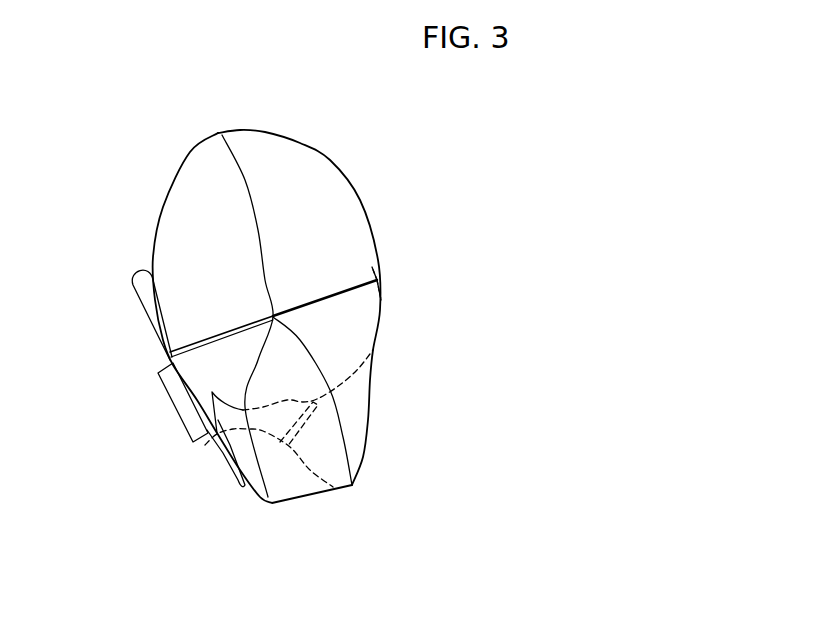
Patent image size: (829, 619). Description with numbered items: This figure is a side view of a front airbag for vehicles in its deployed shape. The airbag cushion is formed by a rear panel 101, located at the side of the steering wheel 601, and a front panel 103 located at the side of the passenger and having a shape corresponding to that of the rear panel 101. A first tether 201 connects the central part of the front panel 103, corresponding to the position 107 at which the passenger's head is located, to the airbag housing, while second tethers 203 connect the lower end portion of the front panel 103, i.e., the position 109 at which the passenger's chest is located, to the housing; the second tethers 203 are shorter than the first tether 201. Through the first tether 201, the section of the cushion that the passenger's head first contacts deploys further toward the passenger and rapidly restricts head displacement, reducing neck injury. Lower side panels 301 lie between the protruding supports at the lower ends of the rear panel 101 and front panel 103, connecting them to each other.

The rear panel 101 is at (180, 190).
The front panel 103 is at (318, 173).
The position at which the passenger's head is located 107 is at (377, 280).
The position at which the passenger's chest is located 109 is at (302, 425).
The first tether 201 is at (333, 295).
The second tethers 203 is at (230, 424).
The lower side panels 301 is at (297, 477).
The steering wheel 601 is at (142, 303).